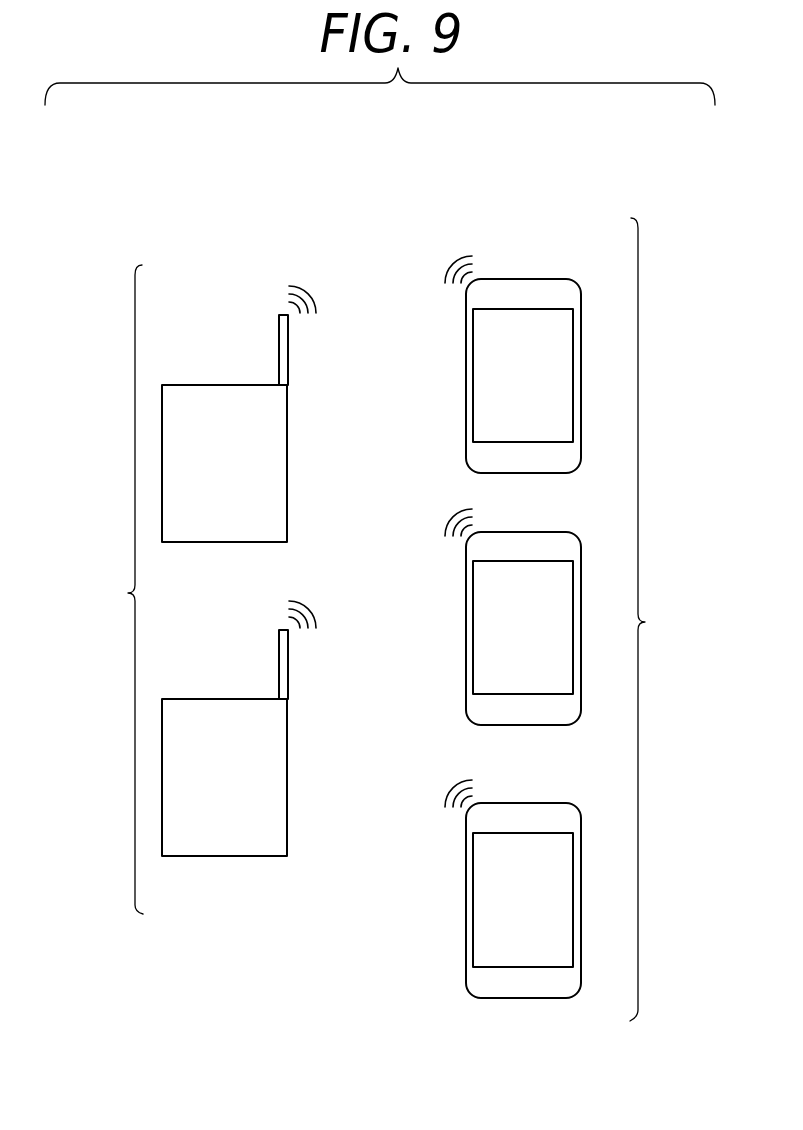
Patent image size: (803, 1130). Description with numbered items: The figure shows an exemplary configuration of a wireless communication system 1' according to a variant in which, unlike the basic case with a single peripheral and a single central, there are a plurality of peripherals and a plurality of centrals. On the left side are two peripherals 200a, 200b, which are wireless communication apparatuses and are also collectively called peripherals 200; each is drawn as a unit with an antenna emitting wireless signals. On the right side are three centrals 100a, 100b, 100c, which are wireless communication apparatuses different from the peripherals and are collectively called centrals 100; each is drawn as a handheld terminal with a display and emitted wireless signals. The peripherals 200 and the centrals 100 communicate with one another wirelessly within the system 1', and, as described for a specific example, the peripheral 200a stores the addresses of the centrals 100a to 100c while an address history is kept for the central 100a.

The wireless communication system 1' is at (380, 122).
The centrals 100 is at (657, 619).
The central 100a is at (537, 278).
The central 100b is at (537, 531).
The central 100c is at (537, 802).
The peripherals 200 is at (115, 589).
The peripheral 200a is at (177, 384).
The peripheral 200b is at (177, 698).